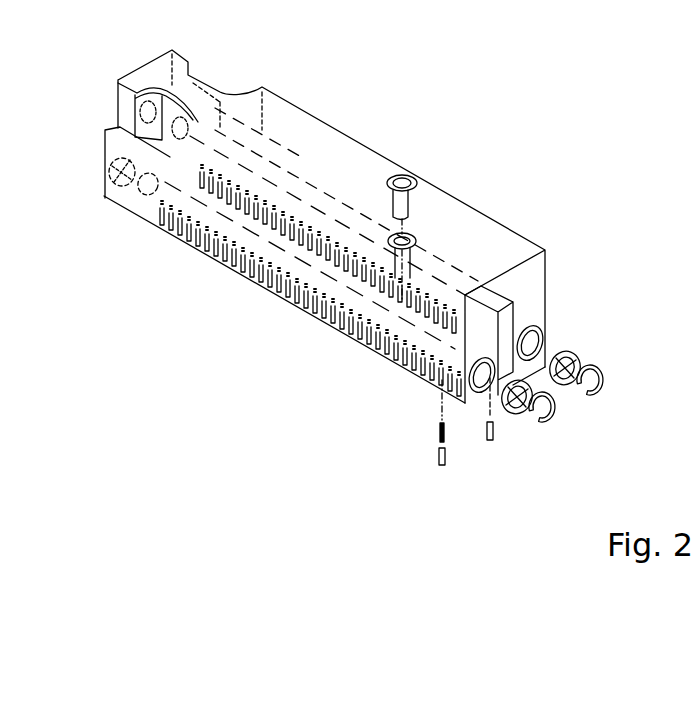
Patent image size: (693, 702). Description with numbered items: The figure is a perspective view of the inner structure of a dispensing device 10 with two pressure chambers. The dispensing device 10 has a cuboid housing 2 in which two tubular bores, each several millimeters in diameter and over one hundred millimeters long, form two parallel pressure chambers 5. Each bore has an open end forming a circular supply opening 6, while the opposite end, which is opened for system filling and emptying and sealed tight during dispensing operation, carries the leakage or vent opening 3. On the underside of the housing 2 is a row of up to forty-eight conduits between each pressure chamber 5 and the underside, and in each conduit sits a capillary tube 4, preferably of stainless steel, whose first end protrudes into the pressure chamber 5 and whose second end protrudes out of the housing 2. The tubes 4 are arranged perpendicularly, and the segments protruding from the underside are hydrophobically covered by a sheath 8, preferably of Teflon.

The dispensing device 10 is at (513, 128).
The housing 2 is at (296, 138).
The leakage/vent opening 3 is at (120, 163).
The tube 4 is at (212, 255).
The pressure chamber 5 is at (322, 270).
The supply opening 6 is at (493, 367).
The sheath 8 is at (446, 458).